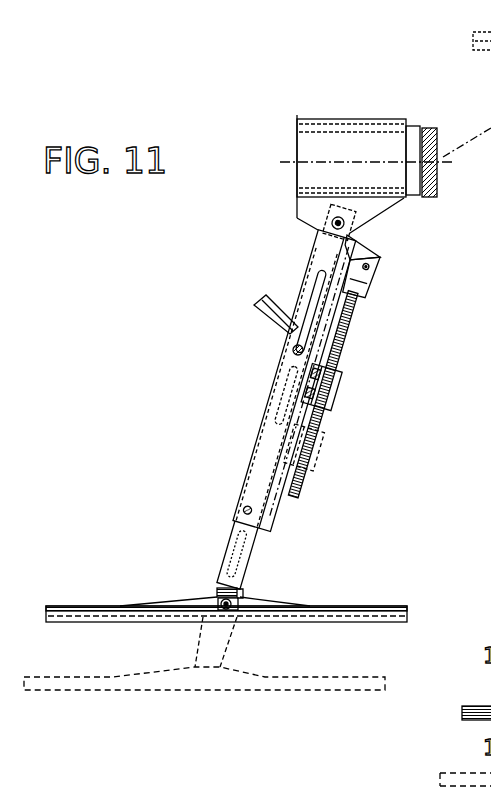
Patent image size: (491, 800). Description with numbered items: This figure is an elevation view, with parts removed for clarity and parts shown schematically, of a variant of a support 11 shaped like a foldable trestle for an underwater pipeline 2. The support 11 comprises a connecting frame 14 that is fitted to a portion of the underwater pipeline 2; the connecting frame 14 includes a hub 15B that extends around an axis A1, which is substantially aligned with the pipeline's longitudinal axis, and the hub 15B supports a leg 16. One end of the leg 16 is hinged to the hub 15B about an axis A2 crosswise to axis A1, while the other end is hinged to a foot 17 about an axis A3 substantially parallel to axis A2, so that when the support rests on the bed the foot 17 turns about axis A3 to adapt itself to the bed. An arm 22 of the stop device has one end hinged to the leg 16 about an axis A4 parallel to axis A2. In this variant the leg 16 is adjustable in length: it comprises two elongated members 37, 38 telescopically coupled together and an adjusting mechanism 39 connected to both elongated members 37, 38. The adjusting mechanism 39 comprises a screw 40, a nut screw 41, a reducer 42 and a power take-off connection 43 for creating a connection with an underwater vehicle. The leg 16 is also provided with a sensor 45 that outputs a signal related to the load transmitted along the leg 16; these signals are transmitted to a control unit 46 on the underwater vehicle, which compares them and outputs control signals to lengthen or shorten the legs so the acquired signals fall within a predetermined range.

The underwater pipeline 2 is at (438, 144).
The support 11 is at (185, 352).
The connecting frame 14 is at (290, 72).
The hub 15B is at (352, 110).
The leg 16 is at (246, 430).
The foot 17 is at (120, 606).
The arm 22 is at (276, 322).
The elongated member 37 is at (326, 266).
The elongated member 38 is at (232, 548).
The adjusting mechanism 39 is at (350, 398).
The screw 40 is at (352, 337).
The nut screw 41 is at (340, 383).
The reducer 42 is at (370, 276).
The power take-off connection 43 is at (372, 254).
The sensor 45 is at (242, 597).
The control unit 46 is at (216, 588).
The axis A1 is at (361, 160).
The axis A2 is at (346, 224).
The axis A3 is at (228, 612).
The axis A4 is at (288, 351).